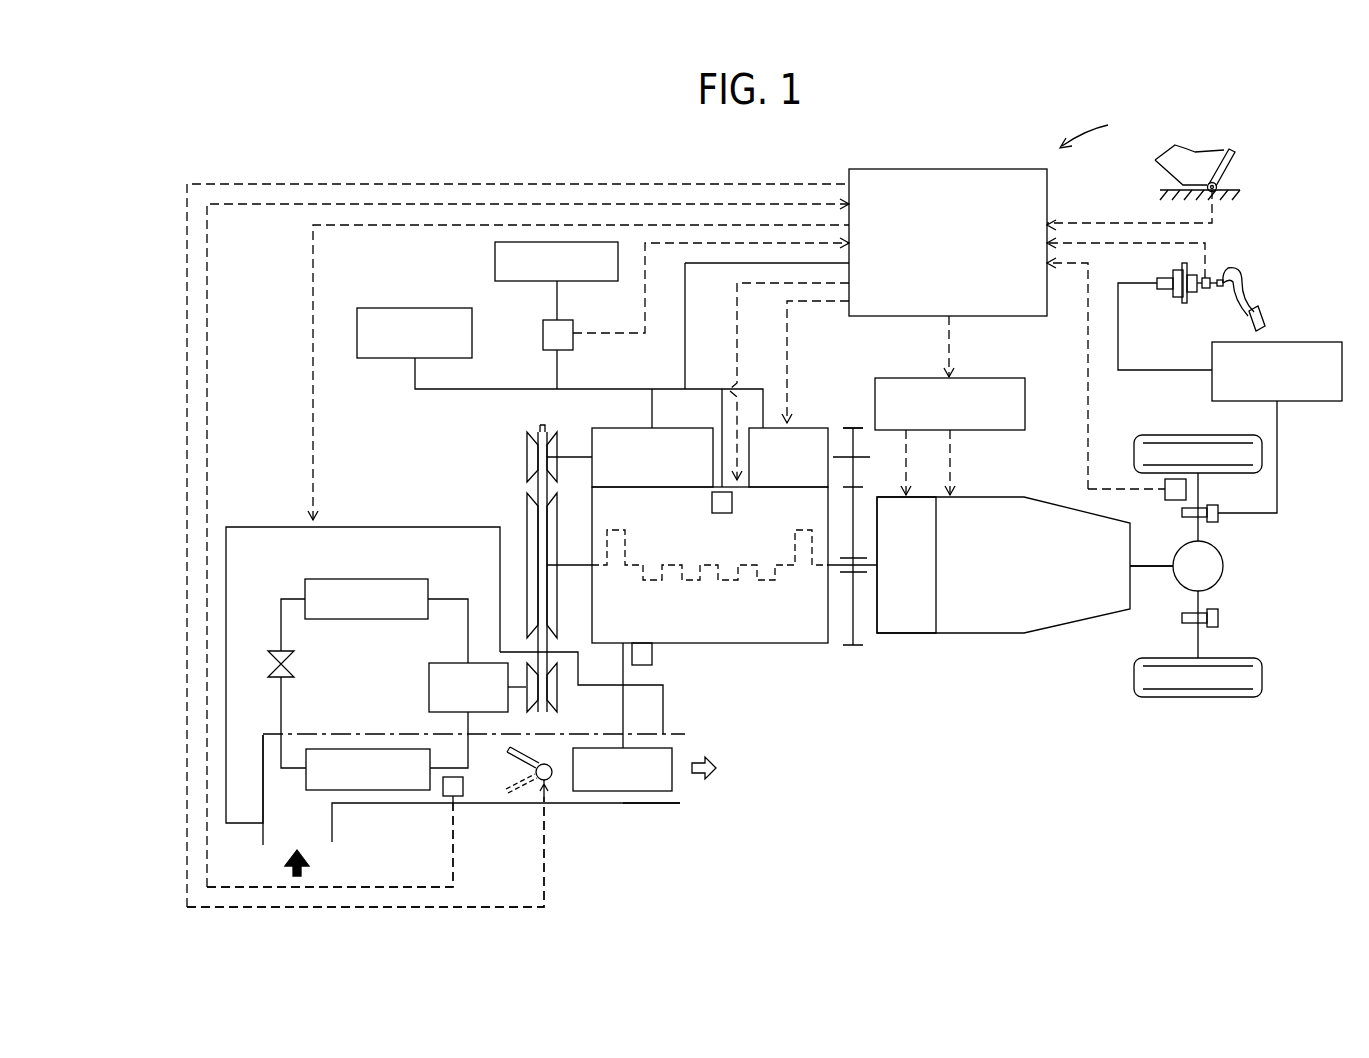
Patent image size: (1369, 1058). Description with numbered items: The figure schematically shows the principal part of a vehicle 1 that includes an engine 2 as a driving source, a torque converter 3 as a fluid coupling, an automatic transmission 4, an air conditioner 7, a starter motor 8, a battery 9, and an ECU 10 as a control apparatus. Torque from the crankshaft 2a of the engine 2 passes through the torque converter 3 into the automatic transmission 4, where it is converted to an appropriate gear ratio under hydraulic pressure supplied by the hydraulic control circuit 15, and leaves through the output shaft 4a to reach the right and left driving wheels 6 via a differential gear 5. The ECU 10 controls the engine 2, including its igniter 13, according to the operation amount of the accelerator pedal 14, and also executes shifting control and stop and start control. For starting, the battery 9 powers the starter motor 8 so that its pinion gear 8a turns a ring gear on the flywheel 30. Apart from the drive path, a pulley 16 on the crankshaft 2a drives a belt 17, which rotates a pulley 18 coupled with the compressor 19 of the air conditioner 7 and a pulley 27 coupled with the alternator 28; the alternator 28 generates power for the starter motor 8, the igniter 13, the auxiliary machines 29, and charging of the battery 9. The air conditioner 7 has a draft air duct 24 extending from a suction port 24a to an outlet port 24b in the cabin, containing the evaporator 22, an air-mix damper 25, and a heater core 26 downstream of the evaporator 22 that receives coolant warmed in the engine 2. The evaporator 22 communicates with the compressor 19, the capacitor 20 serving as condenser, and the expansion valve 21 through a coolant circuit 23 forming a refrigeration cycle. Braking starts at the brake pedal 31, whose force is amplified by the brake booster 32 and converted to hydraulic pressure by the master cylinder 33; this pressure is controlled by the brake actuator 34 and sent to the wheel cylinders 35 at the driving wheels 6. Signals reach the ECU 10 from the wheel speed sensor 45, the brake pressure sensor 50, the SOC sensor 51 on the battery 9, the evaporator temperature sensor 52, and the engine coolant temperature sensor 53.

The vehicle 1 is at (1094, 128).
The engine 2 is at (780, 644).
The crankshaft 2a is at (690, 582).
The torque converter 3 is at (905, 634).
The automatic transmission 4 is at (970, 634).
The output shaft 4a is at (1162, 570).
The differential gear 5 is at (1224, 566).
The driving wheels 6 is at (1177, 434).
The air conditioner 7 is at (547, 866).
The starter motor 8 is at (803, 428).
The pinion gear 8a is at (847, 425).
The battery 9 is at (495, 258).
The ECU 10 is at (941, 169).
The igniter 13 is at (712, 502).
The accelerator pedal 14 is at (1232, 160).
The hydraulic control circuit 15 is at (995, 378).
The pulley 16 is at (526, 520).
The belt 17 is at (540, 431).
The pulley 18 is at (557, 700).
The compressor 19 is at (429, 682).
The capacitor 20 is at (390, 579).
The expansion valve 21 is at (294, 664).
The evaporator 22 is at (336, 749).
The coolant circuit 23 is at (468, 650).
The draft air duct 24 is at (263, 748).
The suction port 24a is at (332, 838).
The outlet port 24b is at (680, 796).
The air-mix damper 25 is at (520, 762).
The heater core 26 is at (675, 755).
The pulley 27 is at (526, 462).
The alternator 28 is at (605, 428).
The auxiliary machines 29 is at (380, 308).
The flywheel 30 is at (855, 645).
The brake pedal 31 is at (1258, 309).
The brake booster 32 is at (1189, 300).
The master cylinder 33 is at (1165, 291).
The brake actuator 34 is at (1316, 342).
The wheel cylinders 35 is at (1219, 618).
The wheel speed sensor 45 is at (1170, 500).
The brake pressure sensor 50 is at (1208, 278).
The SOC sensor 51 is at (543, 337).
The evaporator temperature sensor 52 is at (448, 800).
The engine coolant temperature sensor 53 is at (652, 655).